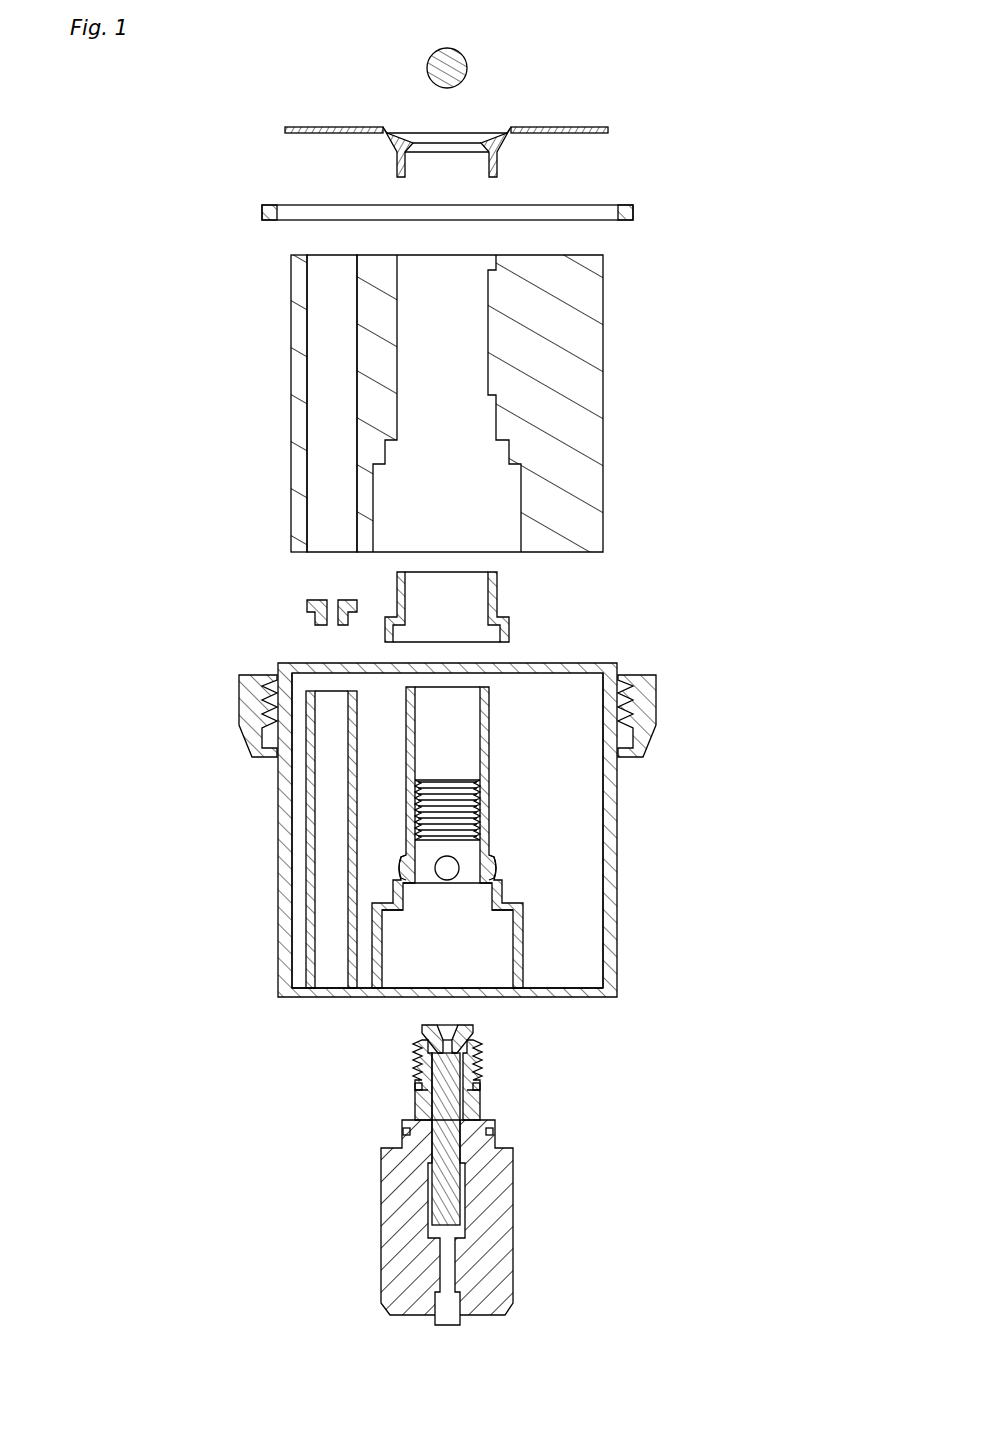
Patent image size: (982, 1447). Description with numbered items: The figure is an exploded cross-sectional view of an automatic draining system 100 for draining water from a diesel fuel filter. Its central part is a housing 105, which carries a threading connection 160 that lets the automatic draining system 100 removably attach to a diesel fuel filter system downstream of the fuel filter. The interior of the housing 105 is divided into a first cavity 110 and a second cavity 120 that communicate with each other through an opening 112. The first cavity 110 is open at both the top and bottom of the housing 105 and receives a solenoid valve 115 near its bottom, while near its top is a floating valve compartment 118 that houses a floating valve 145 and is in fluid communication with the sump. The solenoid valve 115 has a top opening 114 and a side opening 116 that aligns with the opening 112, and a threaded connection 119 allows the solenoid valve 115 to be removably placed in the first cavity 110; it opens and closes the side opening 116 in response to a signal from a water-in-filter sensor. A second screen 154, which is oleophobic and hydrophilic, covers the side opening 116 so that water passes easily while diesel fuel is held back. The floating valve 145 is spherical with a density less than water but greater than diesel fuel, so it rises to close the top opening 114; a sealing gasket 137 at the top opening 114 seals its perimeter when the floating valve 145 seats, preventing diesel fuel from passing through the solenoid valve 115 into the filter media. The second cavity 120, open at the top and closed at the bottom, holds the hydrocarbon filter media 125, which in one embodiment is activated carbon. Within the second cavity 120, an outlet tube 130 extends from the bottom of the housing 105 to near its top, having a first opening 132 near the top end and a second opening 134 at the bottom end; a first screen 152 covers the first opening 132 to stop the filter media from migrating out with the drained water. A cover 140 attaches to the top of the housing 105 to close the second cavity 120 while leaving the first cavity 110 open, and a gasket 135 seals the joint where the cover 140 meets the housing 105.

The automatic draining system 100 is at (740, 374).
The housing 105 is at (613, 823).
The first cavity 110 is at (493, 950).
The opening 112 is at (407, 867).
The top opening 114 is at (447, 1037).
The solenoid valve 115 is at (515, 1230).
The side opening 116 is at (422, 1108).
The floating valve compartment 118 is at (453, 753).
The threaded connection 119 is at (413, 1060).
The second cavity 120 is at (583, 800).
The hydrocarbon filter media 125 is at (603, 317).
The outlet tube 130 is at (308, 803).
The first opening 132 is at (332, 700).
The second opening 134 is at (332, 992).
The gasket 135 is at (597, 205).
The sealing gasket 137 is at (425, 1033).
The cover 140 is at (308, 127).
The floating valve 145 is at (429, 60).
The first screen 152 is at (308, 602).
The second screen 154 is at (508, 620).
The threading connection 160 is at (625, 670).